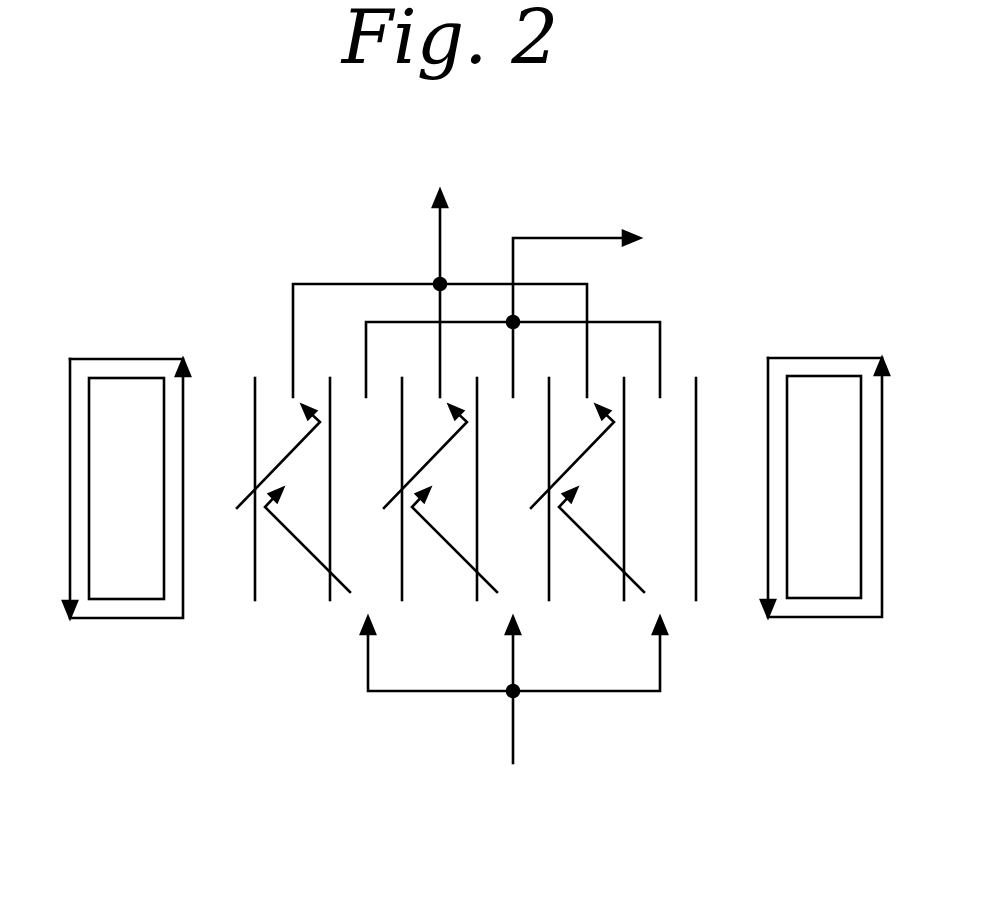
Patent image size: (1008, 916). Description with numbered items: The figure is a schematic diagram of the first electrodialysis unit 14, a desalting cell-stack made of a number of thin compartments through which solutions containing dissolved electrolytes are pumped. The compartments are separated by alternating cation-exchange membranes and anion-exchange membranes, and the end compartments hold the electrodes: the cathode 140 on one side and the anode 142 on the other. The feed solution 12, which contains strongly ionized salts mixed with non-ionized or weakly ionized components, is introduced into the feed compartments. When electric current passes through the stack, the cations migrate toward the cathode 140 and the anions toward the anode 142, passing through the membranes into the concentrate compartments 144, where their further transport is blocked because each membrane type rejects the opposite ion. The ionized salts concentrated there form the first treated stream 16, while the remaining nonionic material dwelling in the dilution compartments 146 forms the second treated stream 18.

The feed solution 12 is at (514, 708).
The first electrodialysis unit 14 is at (268, 284).
The first treated stream 16 is at (440, 279).
The second treated stream 18 is at (593, 312).
The cathode 140 is at (822, 578).
The anode 142 is at (124, 578).
The concentrate compartments 144 is at (295, 580).
The dilution compartments 146 is at (368, 580).